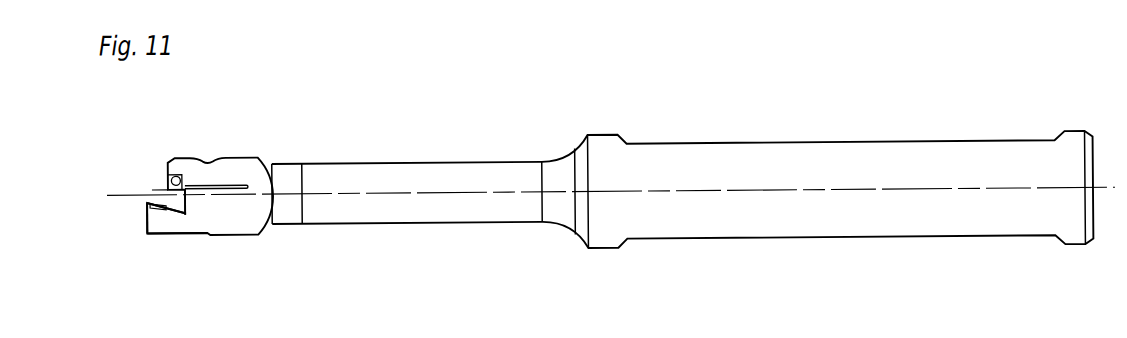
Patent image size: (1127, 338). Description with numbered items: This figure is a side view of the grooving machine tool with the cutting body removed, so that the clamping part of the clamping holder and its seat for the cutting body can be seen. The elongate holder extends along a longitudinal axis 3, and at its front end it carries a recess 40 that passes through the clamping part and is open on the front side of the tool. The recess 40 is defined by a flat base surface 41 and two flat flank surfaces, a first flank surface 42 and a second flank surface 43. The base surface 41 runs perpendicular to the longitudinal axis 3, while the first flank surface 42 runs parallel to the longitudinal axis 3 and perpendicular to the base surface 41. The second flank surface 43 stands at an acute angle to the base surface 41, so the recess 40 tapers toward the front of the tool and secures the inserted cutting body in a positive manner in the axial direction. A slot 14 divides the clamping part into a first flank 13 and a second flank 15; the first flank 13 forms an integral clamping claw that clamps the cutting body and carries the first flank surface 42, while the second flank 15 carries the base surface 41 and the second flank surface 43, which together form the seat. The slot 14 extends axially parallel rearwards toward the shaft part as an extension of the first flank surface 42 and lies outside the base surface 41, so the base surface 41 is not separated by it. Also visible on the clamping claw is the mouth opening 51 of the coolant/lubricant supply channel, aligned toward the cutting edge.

The longitudinal axis 3 is at (953, 195).
The first flank 13 is at (243, 168).
The slot 14 is at (223, 188).
The second flank 15 is at (198, 226).
The recess 40 is at (147, 186).
The base surface 41 is at (185, 214).
The first flank surface 42 is at (178, 177).
The second flank surface 43 is at (147, 236).
The mouth opening 51 is at (168, 182).